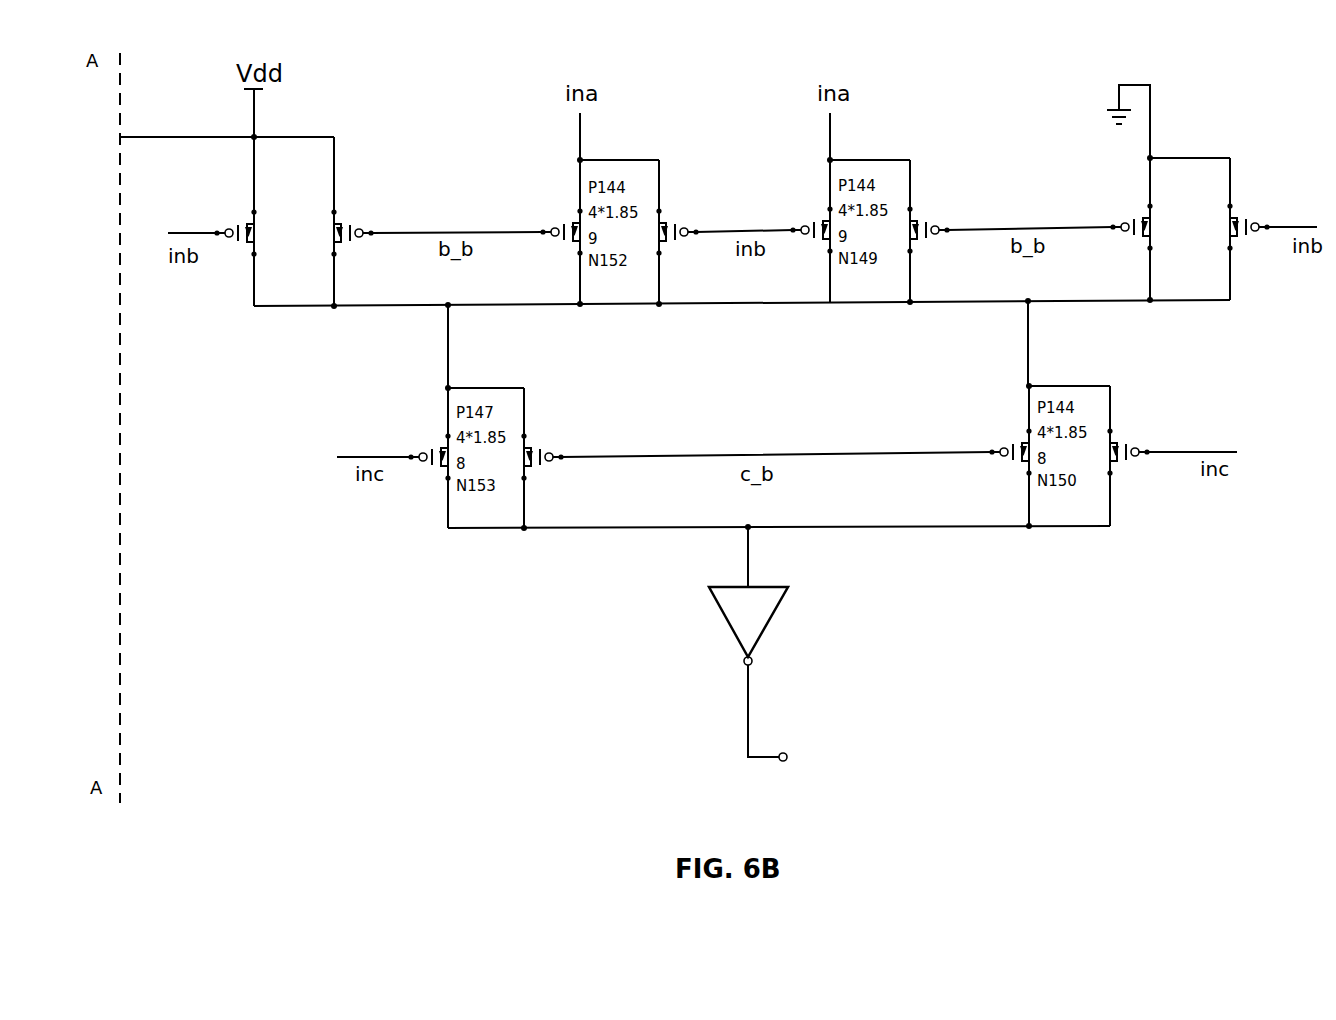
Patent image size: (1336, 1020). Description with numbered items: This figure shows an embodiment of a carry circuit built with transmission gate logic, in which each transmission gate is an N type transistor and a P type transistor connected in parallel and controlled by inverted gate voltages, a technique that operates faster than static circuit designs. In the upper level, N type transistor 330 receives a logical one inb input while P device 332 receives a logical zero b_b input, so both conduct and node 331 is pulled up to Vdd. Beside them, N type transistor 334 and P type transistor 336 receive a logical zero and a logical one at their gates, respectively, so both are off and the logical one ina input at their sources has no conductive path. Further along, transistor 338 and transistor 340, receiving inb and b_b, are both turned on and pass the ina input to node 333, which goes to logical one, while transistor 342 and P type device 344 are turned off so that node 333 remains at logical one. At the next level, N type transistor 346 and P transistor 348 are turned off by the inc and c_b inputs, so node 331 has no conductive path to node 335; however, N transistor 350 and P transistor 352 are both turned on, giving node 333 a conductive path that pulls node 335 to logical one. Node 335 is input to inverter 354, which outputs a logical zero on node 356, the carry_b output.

The N type transistor 330 is at (233, 200).
The node 331 is at (261, 314).
The P device 332 is at (358, 196).
The node 333 is at (1200, 303).
The N type transistor 334 is at (560, 198).
The node 335 is at (918, 531).
The P type transistor 336 is at (690, 237).
The transistor 338 is at (802, 236).
The transistor 340 is at (935, 198).
The transistor 342 is at (1124, 196).
The P type device 344 is at (1257, 196).
The N type transistor 346 is at (425, 426).
The P transistor 348 is at (558, 464).
The N transistor 350 is at (1000, 461).
The P transistor 352 is at (1133, 426).
The inverter 354 is at (812, 661).
The node 356 is at (748, 734).